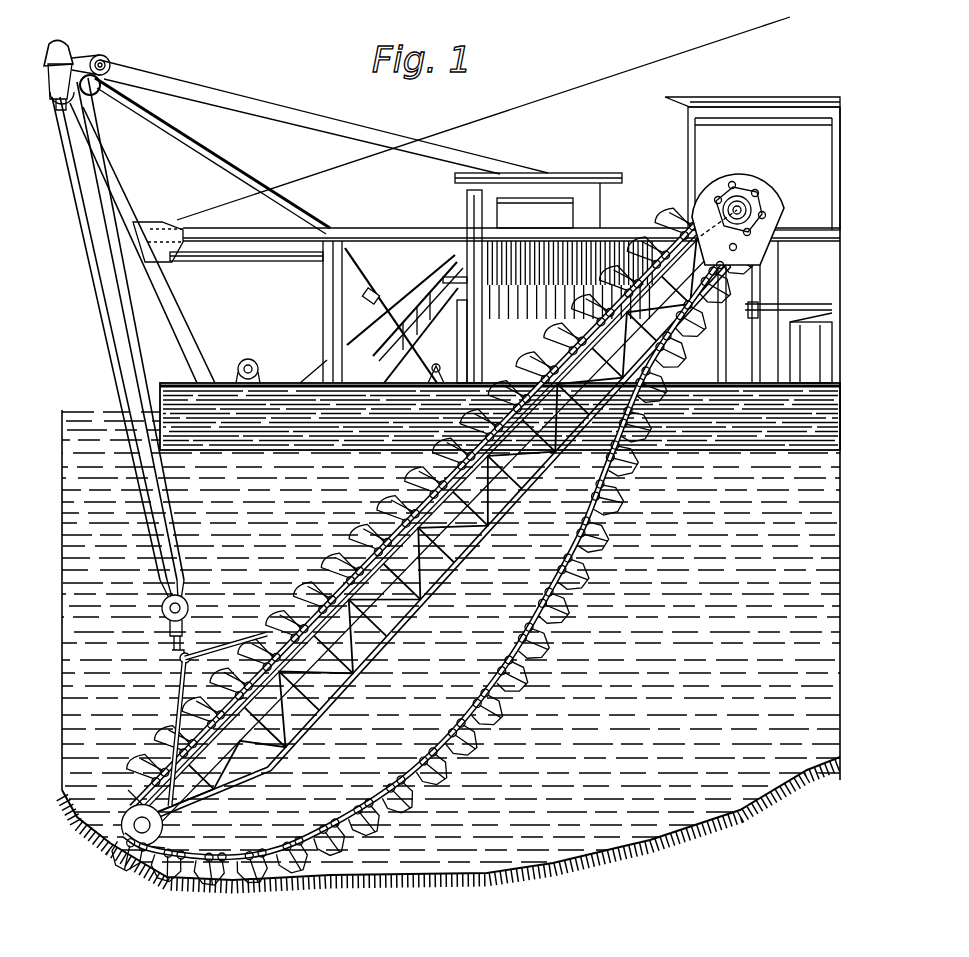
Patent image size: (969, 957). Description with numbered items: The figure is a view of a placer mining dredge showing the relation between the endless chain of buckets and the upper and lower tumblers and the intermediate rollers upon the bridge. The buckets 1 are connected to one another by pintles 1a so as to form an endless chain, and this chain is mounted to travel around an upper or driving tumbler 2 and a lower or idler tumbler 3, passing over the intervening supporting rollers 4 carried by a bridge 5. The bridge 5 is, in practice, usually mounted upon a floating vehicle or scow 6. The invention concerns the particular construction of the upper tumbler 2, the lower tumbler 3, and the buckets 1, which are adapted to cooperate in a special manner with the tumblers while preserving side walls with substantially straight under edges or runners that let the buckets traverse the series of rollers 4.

The buckets 1 is at (433, 555).
The pintles 1a is at (521, 638).
The upper or driving tumbler 2 is at (741, 195).
The lower or idler tumbler 3 is at (139, 862).
The supporting rollers 4 is at (343, 598).
The bridge 5 is at (522, 507).
The floating vehicle or scow 6 is at (166, 398).